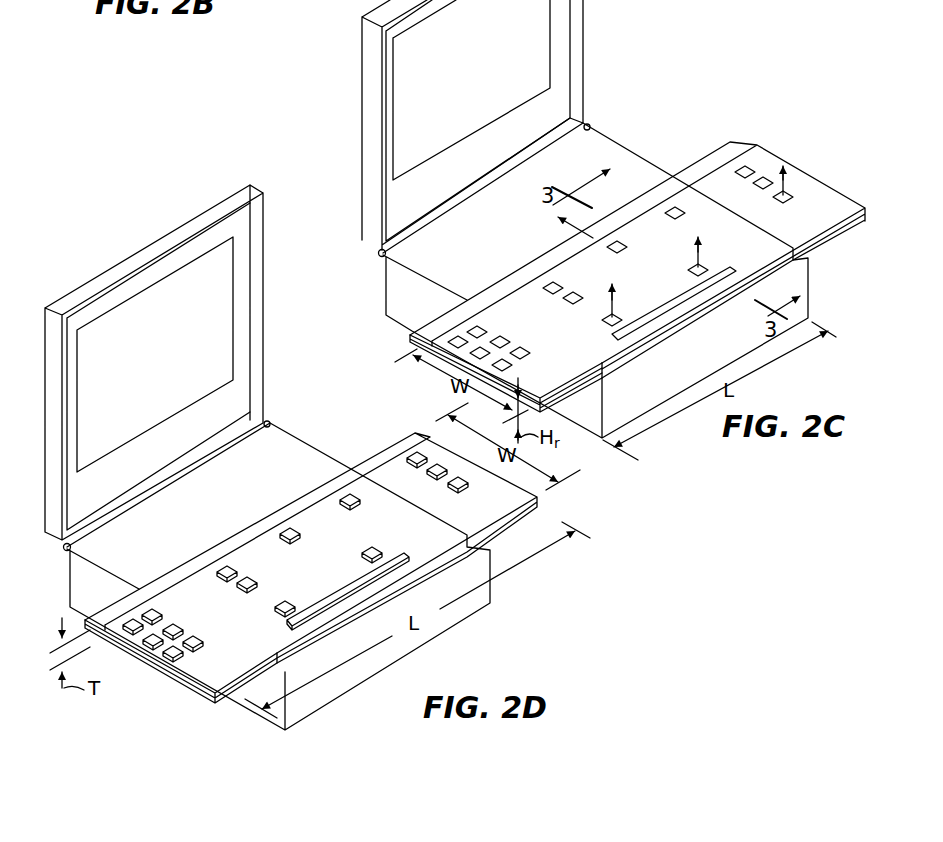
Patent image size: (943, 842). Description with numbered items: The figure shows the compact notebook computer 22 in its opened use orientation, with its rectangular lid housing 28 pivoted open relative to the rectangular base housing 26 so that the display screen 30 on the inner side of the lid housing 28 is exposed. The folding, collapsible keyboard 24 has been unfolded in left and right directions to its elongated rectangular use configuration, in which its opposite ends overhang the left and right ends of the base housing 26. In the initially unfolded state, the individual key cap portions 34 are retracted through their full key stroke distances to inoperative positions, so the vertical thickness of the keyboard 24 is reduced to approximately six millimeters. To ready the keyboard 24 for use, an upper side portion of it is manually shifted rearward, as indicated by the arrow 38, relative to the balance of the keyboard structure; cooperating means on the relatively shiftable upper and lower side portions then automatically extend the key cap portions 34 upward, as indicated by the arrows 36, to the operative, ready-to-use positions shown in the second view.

In FIG. 2C, the compact notebook computer 22 is at (620, 103).
In FIG. 2D, the compact notebook computer 22 is at (296, 407).
In FIG. 2C, the keyboard 24 is at (511, 263).
In FIG. 2D, the keyboard 24 is at (244, 522).
In FIG. 2C, the base housing 26 is at (409, 287).
In FIG. 2D, the base housing 26 is at (82, 582).
In FIG. 2C, the lid housing 28 is at (594, 23).
In FIG. 2D, the lid housing 28 is at (56, 425).
In FIG. 2C, the display screen 30 is at (485, 61).
In FIG. 2D, the display screen 30 is at (158, 372).
In FIG. 2C, the key cap portions 34 is at (676, 207).
In FIG. 2D, the key cap portions 34 is at (174, 626).
In FIG. 2C, the arrows 36 is at (613, 300).
In FIG. 2C, the arrow 38 is at (560, 231).